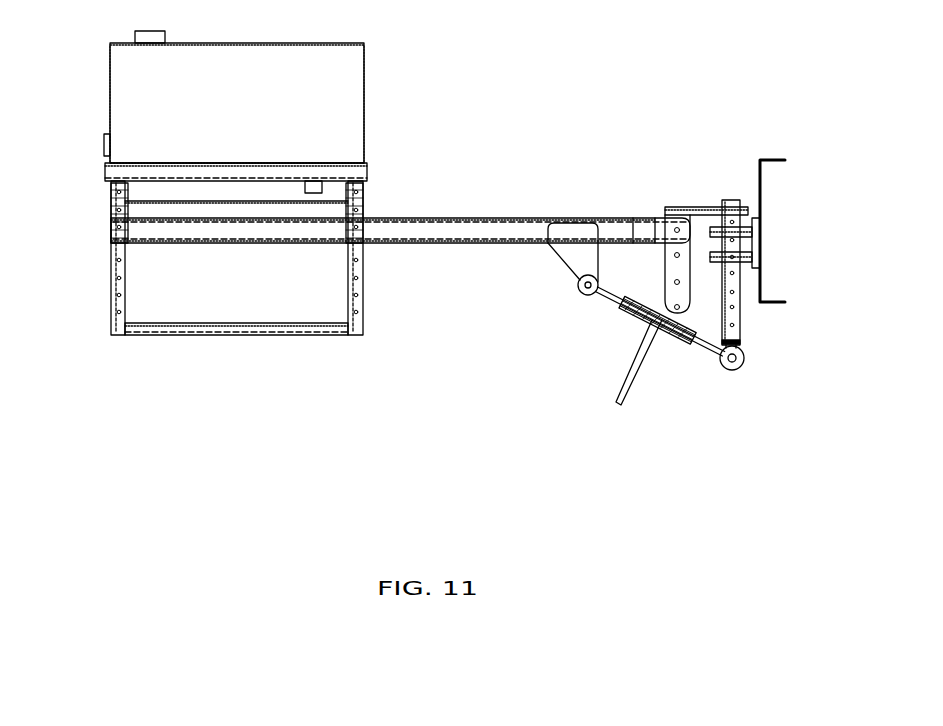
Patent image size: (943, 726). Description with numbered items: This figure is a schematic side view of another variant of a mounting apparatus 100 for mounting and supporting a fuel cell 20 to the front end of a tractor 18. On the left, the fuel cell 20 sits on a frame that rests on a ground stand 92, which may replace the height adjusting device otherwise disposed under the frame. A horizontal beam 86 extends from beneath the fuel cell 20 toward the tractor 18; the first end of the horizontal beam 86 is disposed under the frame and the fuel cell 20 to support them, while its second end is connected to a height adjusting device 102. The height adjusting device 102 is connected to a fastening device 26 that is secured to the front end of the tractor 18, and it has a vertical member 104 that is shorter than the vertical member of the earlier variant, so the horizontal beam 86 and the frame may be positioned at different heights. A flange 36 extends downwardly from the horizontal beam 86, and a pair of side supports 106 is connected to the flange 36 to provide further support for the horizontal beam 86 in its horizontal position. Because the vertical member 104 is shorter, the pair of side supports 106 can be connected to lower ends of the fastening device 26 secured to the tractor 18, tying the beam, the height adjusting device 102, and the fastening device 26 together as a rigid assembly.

The mounting apparatus 100 is at (565, 70).
The fuel cell 20 is at (110, 88).
The ground stand 92 is at (110, 302).
The horizontal beam 86 is at (460, 228).
The flange 36 is at (572, 262).
The pair of side supports 106 is at (632, 310).
The vertical member 104 is at (683, 316).
The height adjusting device 102 is at (683, 222).
The fastening device 26 is at (731, 200).
The tractor 18 is at (790, 198).